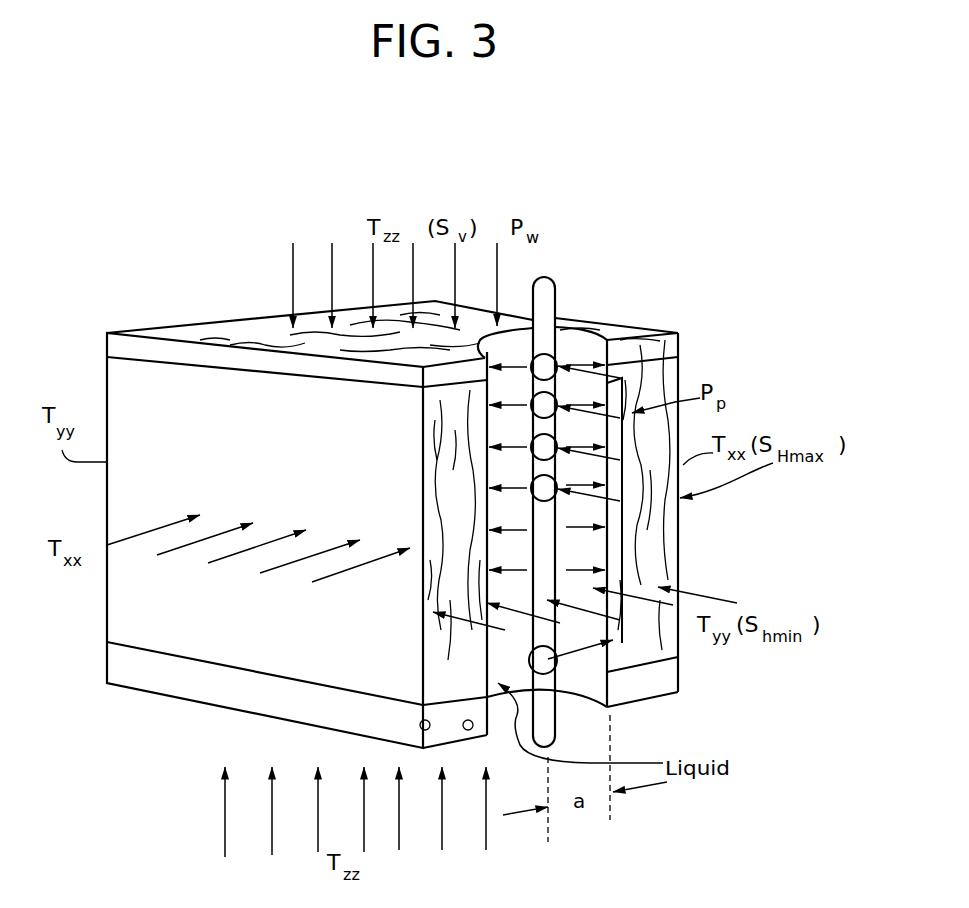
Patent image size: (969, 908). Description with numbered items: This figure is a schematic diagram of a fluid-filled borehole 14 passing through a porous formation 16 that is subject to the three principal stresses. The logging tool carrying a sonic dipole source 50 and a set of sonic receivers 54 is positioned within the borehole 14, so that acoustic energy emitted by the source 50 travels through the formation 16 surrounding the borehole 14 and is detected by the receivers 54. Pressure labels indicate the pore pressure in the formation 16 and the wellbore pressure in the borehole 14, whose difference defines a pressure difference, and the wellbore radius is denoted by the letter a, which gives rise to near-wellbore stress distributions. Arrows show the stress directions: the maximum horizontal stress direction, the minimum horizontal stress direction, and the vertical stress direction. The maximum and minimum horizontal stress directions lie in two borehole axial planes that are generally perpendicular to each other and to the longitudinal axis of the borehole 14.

The borehole 14 is at (601, 554).
The formation 16 is at (368, 452).
The sonic dipole source 50 is at (557, 663).
The receivers 54 is at (557, 480).